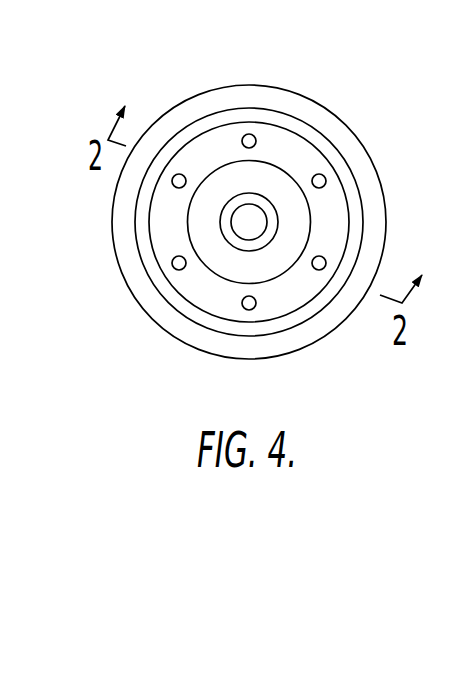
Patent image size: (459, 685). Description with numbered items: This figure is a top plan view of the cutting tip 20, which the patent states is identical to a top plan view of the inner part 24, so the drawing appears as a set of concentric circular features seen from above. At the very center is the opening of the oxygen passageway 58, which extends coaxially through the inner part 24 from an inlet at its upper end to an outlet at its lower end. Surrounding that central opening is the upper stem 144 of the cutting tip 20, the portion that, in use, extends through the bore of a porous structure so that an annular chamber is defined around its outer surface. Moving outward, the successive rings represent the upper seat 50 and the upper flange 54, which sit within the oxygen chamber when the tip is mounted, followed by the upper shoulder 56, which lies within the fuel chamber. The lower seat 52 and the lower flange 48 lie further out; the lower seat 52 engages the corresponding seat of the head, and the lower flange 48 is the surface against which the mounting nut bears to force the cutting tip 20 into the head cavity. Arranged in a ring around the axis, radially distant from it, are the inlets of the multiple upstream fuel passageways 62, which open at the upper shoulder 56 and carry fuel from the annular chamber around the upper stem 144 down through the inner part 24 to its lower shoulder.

The cutting tip 20 is at (231, 68).
The inner part 24 is at (358, 119).
The lower flange 48 is at (373, 157).
The lower seat 52 is at (140, 207).
The upper shoulder 56 is at (337, 242).
The upper flange 54 is at (290, 239).
The upper seat 50 is at (281, 222).
The oxygen passageway 58 is at (247, 220).
The upstream fuel passageways 62 is at (183, 176).
The upper stem 144 is at (165, 250).